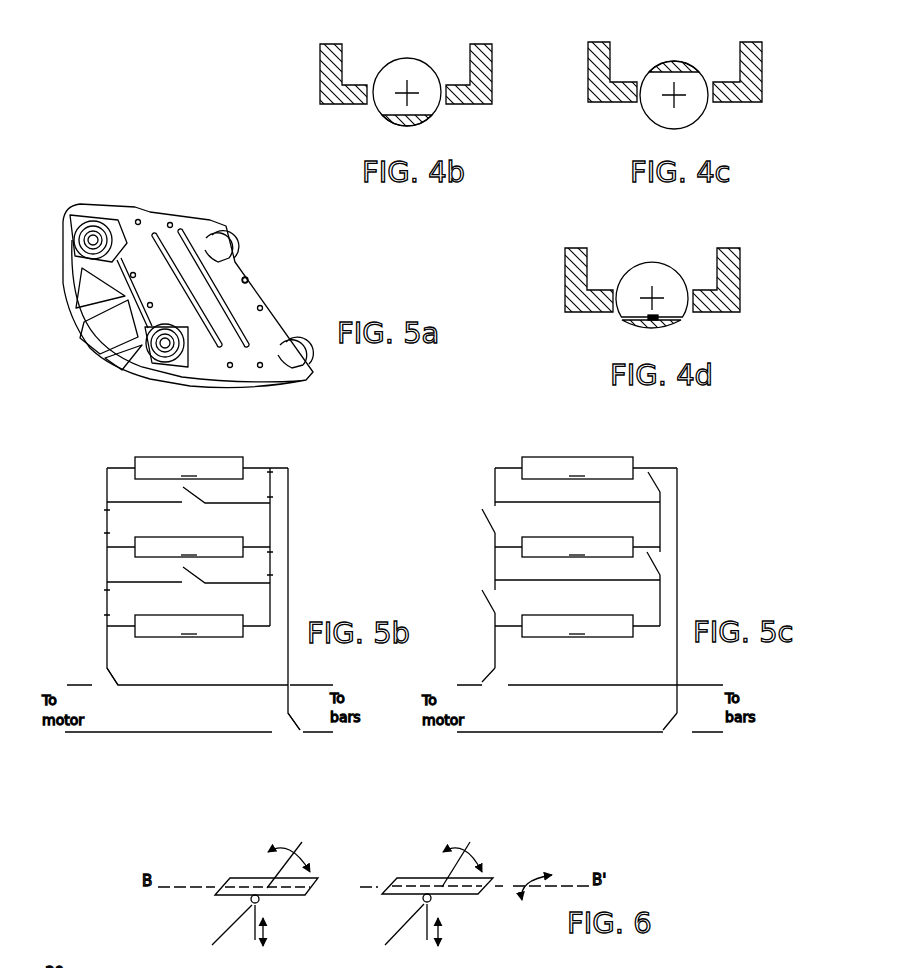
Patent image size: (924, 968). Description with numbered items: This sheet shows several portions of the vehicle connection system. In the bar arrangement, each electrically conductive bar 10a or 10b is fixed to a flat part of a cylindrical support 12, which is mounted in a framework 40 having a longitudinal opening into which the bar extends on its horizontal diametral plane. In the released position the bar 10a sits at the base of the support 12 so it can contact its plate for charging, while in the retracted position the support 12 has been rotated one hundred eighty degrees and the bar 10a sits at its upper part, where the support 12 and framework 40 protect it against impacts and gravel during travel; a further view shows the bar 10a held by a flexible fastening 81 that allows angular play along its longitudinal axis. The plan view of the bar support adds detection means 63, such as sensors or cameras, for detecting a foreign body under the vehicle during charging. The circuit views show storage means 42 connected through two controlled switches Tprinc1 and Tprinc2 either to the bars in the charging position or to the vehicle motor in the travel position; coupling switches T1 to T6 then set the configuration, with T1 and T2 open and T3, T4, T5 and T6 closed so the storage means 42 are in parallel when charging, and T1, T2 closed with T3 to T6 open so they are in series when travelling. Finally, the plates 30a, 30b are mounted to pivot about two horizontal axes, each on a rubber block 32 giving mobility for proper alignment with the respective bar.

In FIG. 4b, the support 12 is at (413, 68).
In FIG. 4c, the support 12 is at (655, 113).
In FIG. 4d, the support 12 is at (657, 272).
In FIG. 4b, the bar 10a is at (388, 121).
In FIG. 4c, the bar 10a is at (668, 63).
In FIG. 4d, the bar 10a is at (680, 327).
In FIG. 5a, the bar 10a is at (180, 222).
In FIG. 5a, the bar 10b is at (147, 212).
In FIG. 4b, the framework 40 is at (478, 99).
In FIG. 4c, the framework 40 is at (742, 100).
In FIG. 4d, the framework 40 is at (720, 300).
In FIG. 4d, the flexible fastening 81 is at (647, 325).
In FIG. 5a, the detection means 63 is at (250, 281).
In FIG. 5b, the storage means 42 is at (189, 547).
In FIG. 5c, the storage means 42 is at (577, 547).
In FIG. 5b, the controlled switch T1 is at (185, 585).
In FIG. 5c, the controlled switch T1 is at (580, 581).
In FIG. 5b, the controlled switch T2 is at (185, 505).
In FIG. 5c, the controlled switch T2 is at (580, 503).
In FIG. 5b, the controlled switch T3 is at (105, 600).
In FIG. 5c, the controlled switch T3 is at (485, 603).
In FIG. 5b, the controlled switch T4 is at (105, 520).
In FIG. 5c, the controlled switch T4 is at (485, 522).
In FIG. 5b, the controlled switch T5 is at (272, 565).
In FIG. 5c, the controlled switch T5 is at (665, 562).
In FIG. 5b, the controlled switch T6 is at (275, 478).
In FIG. 5c, the controlled switch T6 is at (657, 483).
In FIG. 5b, the controlled switch Tprinc1 is at (118, 680).
In FIG. 5c, the controlled switch Tprinc1 is at (490, 677).
In FIG. 5b, the controlled switch Tprinc2 is at (290, 732).
In FIG. 5c, the controlled switch Tprinc2 is at (673, 728).
In FIG. 6, the plate 30a is at (238, 878).
In FIG. 6, the plate 30b is at (485, 878).
In FIG. 6, the rubber block 32 is at (262, 902).